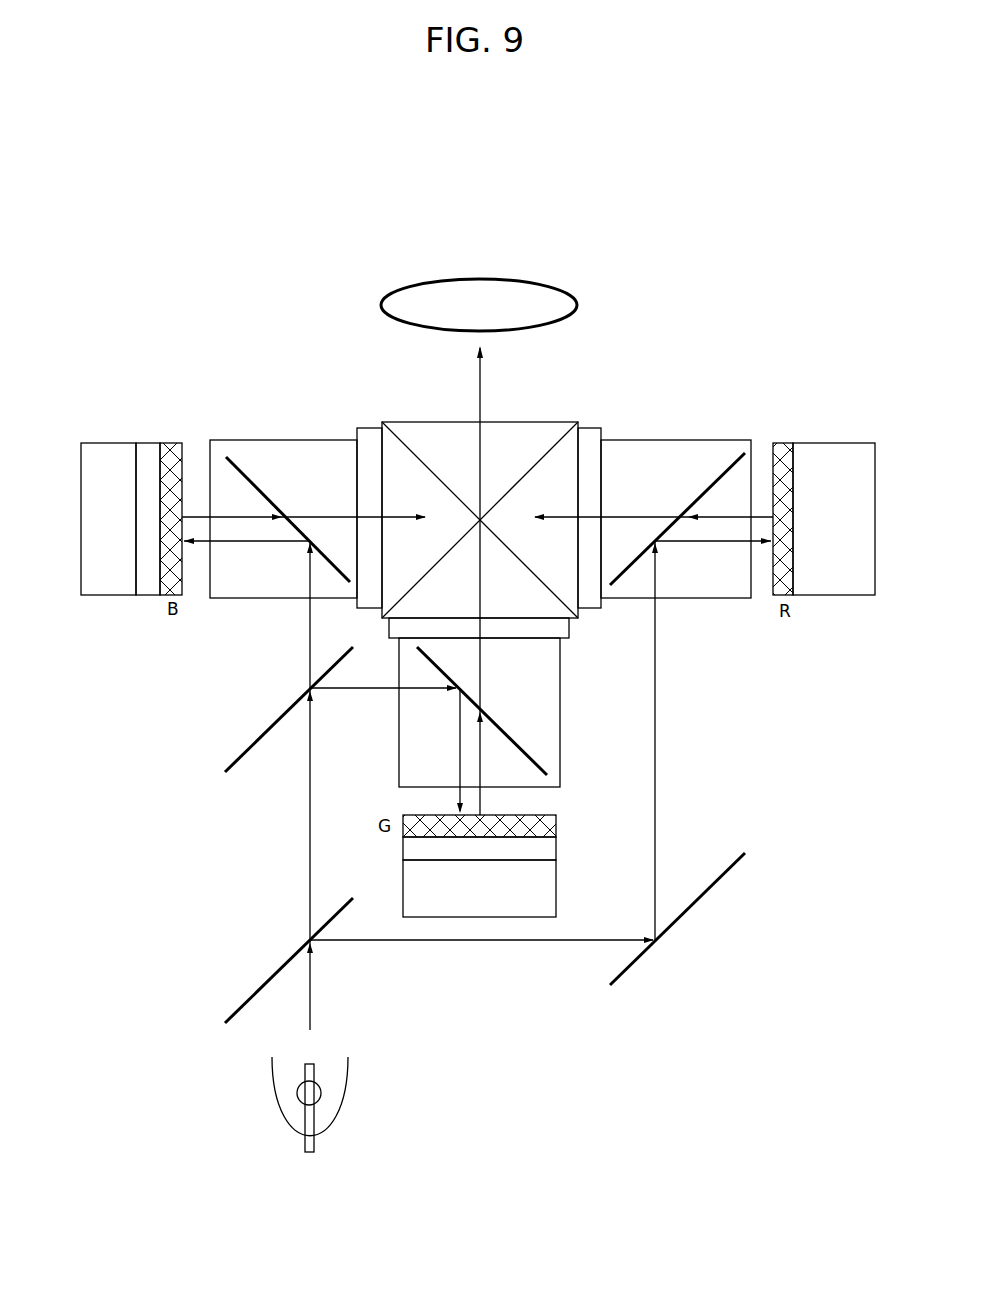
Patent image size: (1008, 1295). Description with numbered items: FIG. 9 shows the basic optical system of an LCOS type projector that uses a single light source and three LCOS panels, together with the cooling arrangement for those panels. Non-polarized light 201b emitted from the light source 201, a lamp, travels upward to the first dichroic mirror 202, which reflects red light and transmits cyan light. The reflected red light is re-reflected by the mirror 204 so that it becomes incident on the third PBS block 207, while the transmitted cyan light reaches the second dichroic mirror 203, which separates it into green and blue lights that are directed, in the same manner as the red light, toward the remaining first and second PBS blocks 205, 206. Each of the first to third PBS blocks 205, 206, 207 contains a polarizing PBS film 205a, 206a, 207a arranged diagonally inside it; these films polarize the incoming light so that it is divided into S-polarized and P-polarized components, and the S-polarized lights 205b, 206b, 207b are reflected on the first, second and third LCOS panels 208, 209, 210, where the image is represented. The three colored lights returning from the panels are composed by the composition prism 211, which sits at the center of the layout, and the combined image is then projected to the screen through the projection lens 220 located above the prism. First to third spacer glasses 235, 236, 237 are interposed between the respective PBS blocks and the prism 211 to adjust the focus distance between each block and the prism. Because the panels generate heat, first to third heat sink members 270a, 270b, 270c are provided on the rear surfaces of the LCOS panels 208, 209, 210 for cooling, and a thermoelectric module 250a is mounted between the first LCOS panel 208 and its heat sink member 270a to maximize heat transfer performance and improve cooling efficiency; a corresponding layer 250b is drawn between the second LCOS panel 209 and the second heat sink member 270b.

The light source 201 is at (346, 1098).
The light from light source 201b is at (310, 1000).
The first dichroic mirror 202 is at (268, 982).
The second dichroic mirror 203 is at (268, 728).
The mirror 204 is at (668, 928).
The first PBS block 205 is at (232, 445).
The PBS film 205a is at (265, 495).
The S-polarized light 205b is at (240, 543).
The second PBS block 206 is at (553, 745).
The PBS film 206a is at (467, 690).
The S-polarized light 206b is at (457, 755).
The third PBS block 207 is at (722, 450).
The PBS film 207a is at (657, 530).
The S-polarized light 207b is at (723, 542).
The first LCOS panel 208 is at (177, 443).
The second LCOS panel 209 is at (556, 818).
The third LCOS panel 210 is at (783, 443).
The composition prism 211 is at (440, 437).
The projection lens 220 is at (513, 300).
The first spacer glass 235 is at (370, 430).
The second spacer glass 236 is at (569, 622).
The third spacer glass 237 is at (588, 428).
The thermoelectric module 250a is at (147, 443).
The green reflective display panel 250b is at (556, 848).
The first heat sink member 270a is at (100, 443).
The second heat sink member 270b is at (556, 888).
The third heat sink member 270c is at (837, 443).